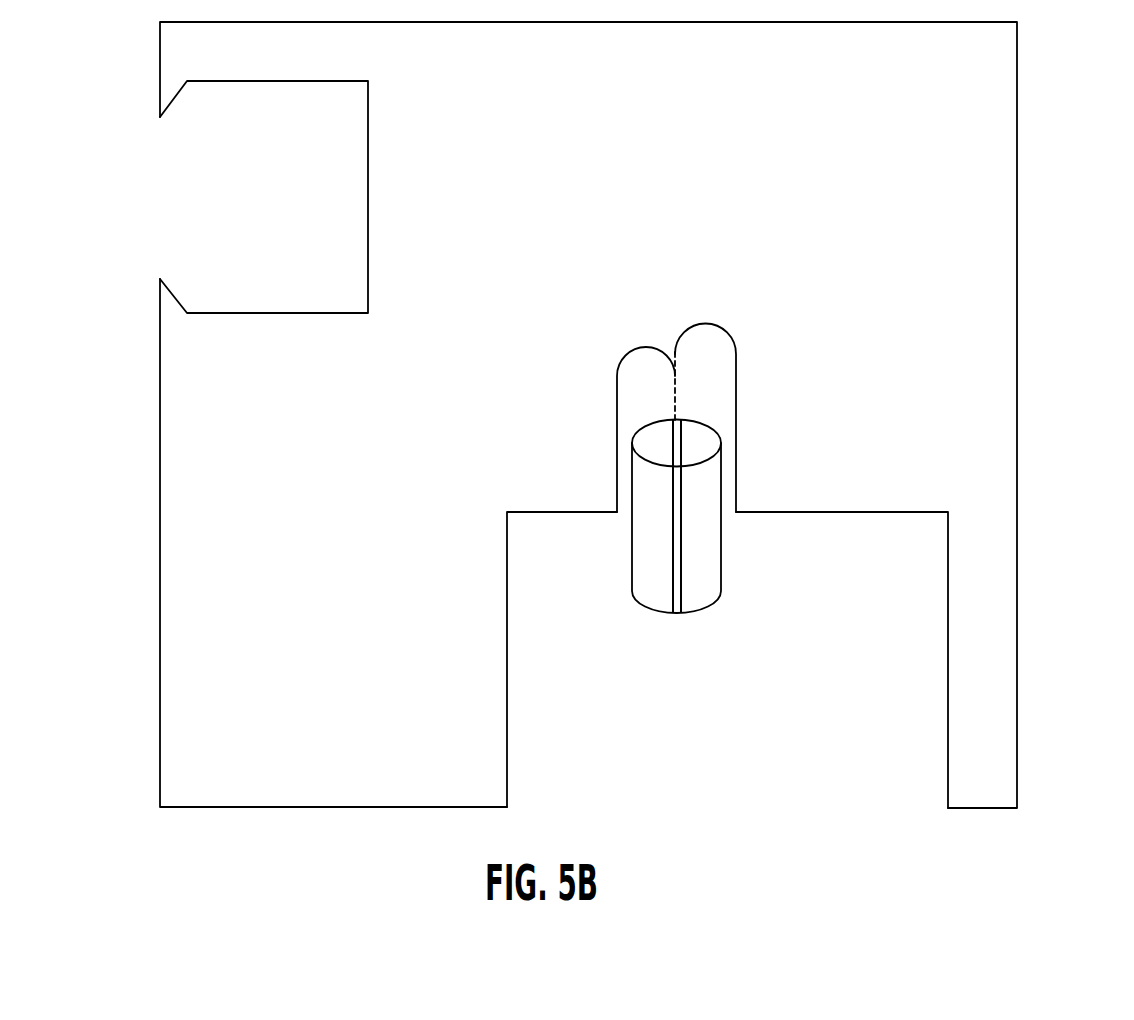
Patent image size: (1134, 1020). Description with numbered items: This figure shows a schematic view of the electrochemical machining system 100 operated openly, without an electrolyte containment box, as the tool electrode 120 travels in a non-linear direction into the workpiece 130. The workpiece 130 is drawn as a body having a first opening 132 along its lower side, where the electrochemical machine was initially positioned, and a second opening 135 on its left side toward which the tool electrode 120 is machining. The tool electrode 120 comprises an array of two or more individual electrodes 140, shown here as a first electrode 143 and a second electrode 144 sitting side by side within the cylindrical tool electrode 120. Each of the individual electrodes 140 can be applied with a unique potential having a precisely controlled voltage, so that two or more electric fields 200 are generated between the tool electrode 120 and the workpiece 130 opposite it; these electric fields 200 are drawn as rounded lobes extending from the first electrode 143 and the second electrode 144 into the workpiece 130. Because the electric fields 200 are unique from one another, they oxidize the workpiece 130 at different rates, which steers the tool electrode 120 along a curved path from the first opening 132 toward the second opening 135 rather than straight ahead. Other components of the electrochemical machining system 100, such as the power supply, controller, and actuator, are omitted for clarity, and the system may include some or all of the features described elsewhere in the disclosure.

The electrochemical machining system 100 is at (595, 461).
The workpiece 130 is at (700, 232).
The first opening 132 is at (821, 805).
The second opening 135 is at (140, 203).
The tool electrode 120 is at (678, 553).
The array of two or more individual electrodes 140 is at (697, 631).
The first electrode 143 is at (666, 531).
The second electrode 144 is at (716, 531).
The electric fields 200 is at (662, 401).